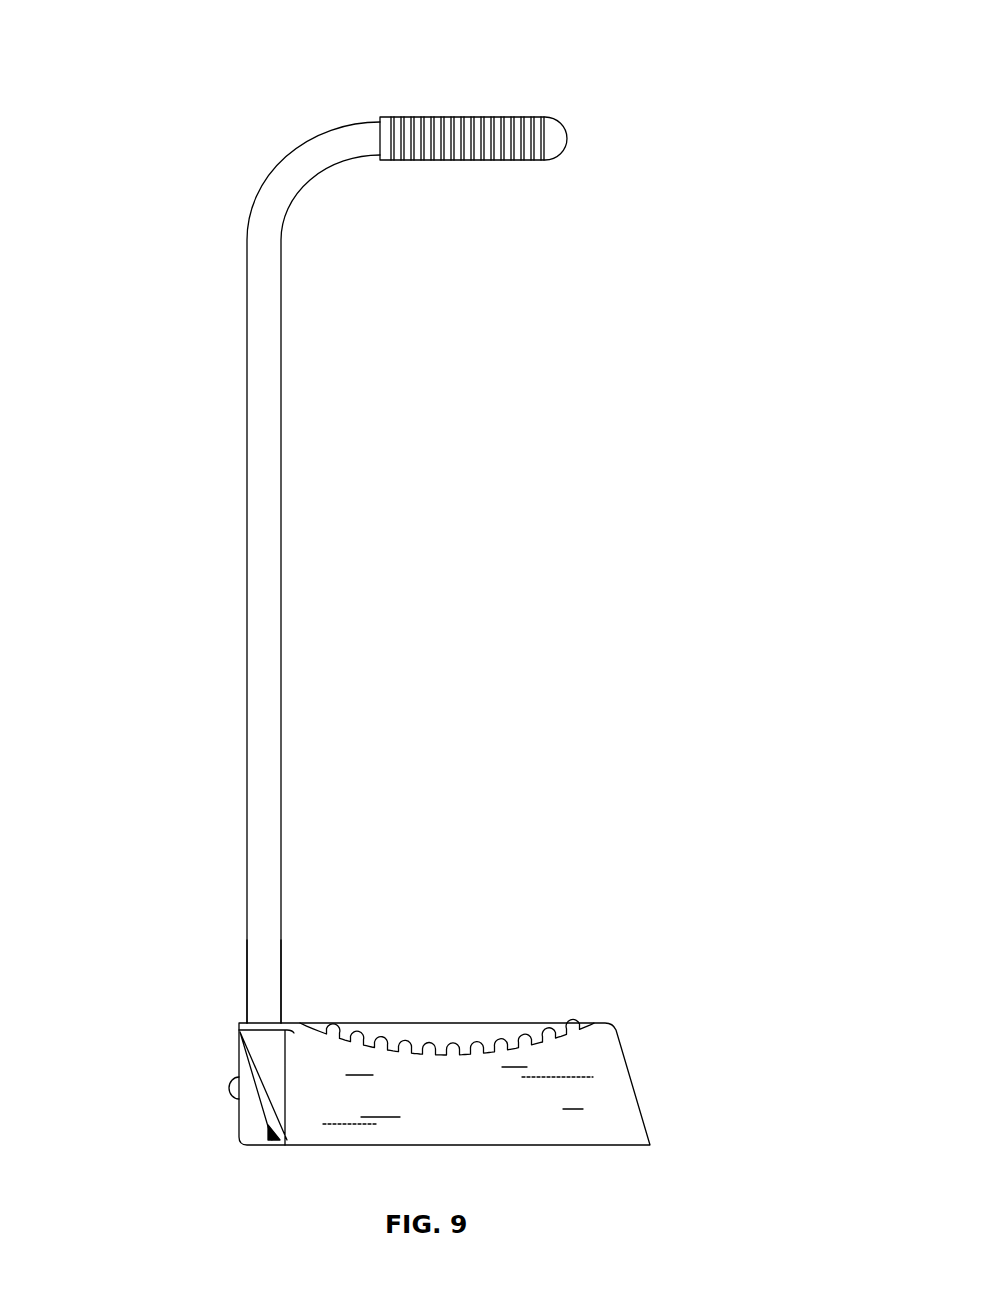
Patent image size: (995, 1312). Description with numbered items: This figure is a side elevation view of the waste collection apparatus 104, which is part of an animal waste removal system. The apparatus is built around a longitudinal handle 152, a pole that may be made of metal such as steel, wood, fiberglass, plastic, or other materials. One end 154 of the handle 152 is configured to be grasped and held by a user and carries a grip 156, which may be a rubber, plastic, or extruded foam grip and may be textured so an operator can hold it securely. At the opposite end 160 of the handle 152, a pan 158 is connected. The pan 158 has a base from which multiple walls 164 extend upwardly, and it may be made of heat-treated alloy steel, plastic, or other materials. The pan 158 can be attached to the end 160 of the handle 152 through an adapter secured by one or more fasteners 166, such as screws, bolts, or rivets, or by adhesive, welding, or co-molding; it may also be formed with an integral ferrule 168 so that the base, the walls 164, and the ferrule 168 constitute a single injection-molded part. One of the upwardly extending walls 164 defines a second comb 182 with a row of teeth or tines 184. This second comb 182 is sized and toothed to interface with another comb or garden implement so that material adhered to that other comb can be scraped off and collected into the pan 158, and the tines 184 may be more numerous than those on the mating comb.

The waste collection apparatus 104 is at (262, 100).
The longitudinal handle 152 is at (247, 365).
The end of the handle 154 is at (245, 205).
The grip 156 is at (440, 118).
The pan 158 is at (632, 1058).
The end of the handle 160 is at (247, 975).
The walls 164 is at (540, 1068).
The fasteners 166 is at (236, 1092).
The ferrule 168 is at (255, 1127).
The second comb 182 is at (430, 1040).
The tines 184 is at (565, 1030).